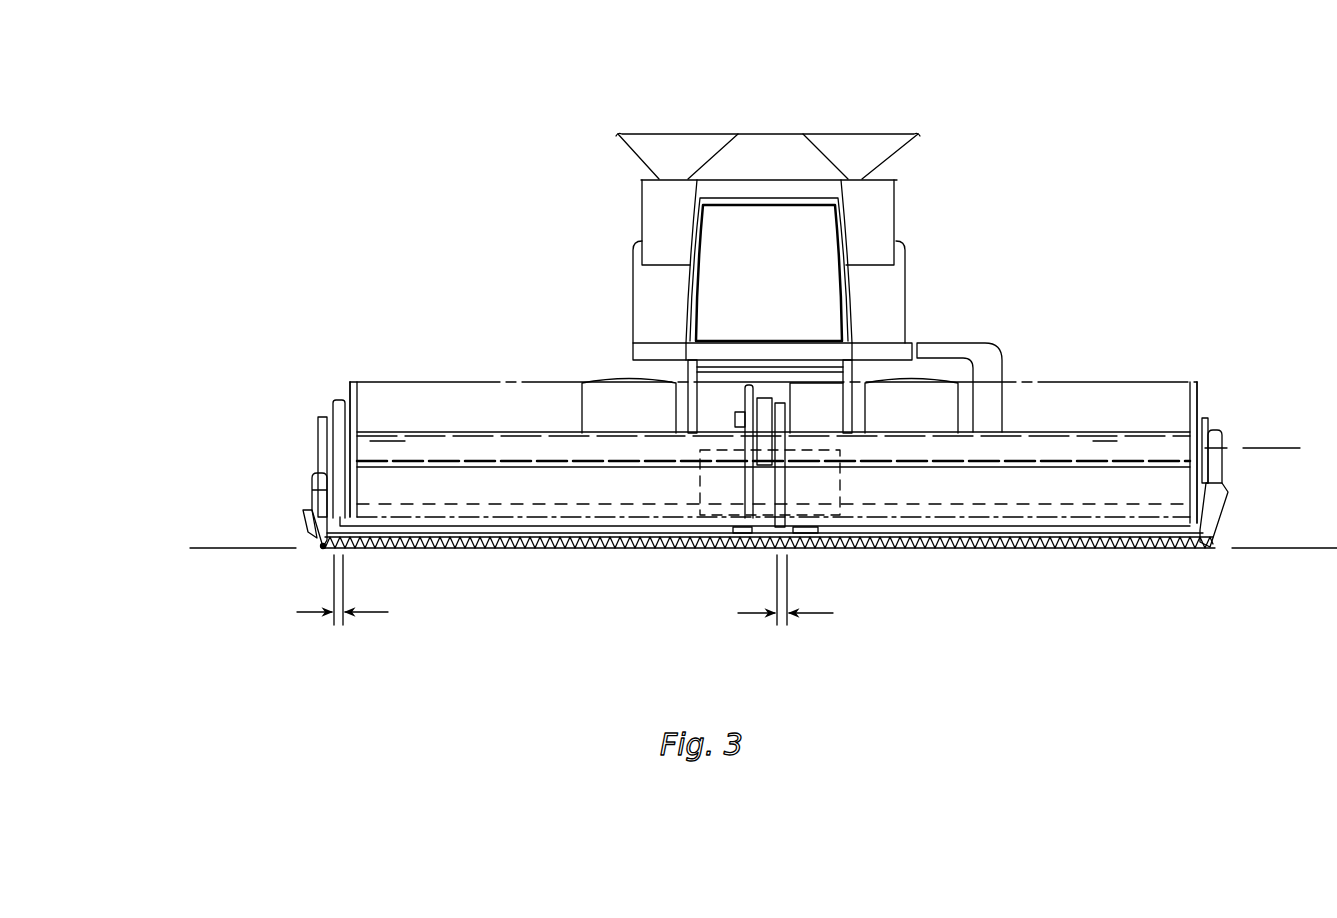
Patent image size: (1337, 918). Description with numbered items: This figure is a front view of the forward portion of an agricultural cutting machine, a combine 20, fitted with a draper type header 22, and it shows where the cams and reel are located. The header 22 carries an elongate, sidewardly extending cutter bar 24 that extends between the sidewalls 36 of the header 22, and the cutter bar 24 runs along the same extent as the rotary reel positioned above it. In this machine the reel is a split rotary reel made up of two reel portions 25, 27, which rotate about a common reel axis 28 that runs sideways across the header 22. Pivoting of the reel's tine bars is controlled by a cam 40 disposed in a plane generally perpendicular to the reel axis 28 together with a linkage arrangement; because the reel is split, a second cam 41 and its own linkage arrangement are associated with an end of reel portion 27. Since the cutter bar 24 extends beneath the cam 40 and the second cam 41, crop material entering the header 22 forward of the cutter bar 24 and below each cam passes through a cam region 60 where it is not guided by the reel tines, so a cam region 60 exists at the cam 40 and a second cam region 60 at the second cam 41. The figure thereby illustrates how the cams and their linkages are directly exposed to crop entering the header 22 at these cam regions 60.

The combine 20 is at (986, 79).
The draper type header 22 is at (292, 407).
The cutter bar 24 is at (553, 550).
The reel portion 25 is at (522, 368).
The reel portion 27 is at (1094, 372).
The reel axis 28 is at (1255, 448).
The sidewalls 36 is at (331, 483).
The cam 40 is at (339, 400).
The second cam 41 is at (789, 410).
The cam region 60 is at (378, 612).